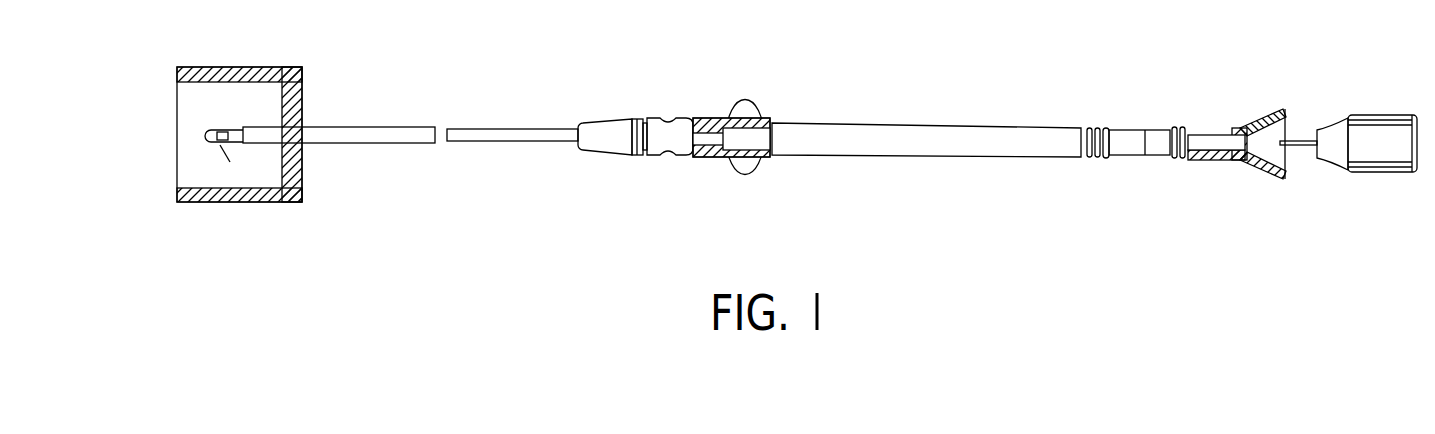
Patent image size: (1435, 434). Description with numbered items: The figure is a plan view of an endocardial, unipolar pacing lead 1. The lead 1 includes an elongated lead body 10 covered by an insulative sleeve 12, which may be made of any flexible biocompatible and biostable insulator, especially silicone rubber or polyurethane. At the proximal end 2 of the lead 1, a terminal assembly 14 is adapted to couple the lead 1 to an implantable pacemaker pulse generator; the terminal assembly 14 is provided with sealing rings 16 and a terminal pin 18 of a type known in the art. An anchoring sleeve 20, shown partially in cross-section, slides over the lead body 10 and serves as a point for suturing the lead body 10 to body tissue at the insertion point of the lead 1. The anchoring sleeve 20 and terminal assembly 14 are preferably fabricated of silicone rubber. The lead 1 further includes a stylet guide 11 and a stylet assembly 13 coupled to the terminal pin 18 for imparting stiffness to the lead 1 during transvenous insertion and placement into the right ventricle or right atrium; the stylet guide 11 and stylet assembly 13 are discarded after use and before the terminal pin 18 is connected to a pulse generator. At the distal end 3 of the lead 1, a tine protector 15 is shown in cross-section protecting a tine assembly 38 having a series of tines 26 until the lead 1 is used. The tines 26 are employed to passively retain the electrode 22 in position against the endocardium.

The lead 1 is at (940, 60).
The proximal end 2 is at (1313, 178).
The distal end 3 is at (254, 163).
The lead body 10 is at (393, 118).
The stylet guide 11 is at (1273, 175).
The insulative sleeve 12 is at (503, 128).
The stylet assembly 13 is at (1331, 125).
The terminal assembly 14 is at (1147, 107).
The tine protector 15 is at (243, 203).
The sealing rings 16 is at (1175, 160).
The terminal pin 18 is at (1215, 135).
The anchoring sleeve 20 is at (687, 118).
The electrode 22 is at (187, 130).
The tines 26 is at (222, 126).
The tine assembly 38 is at (271, 107).